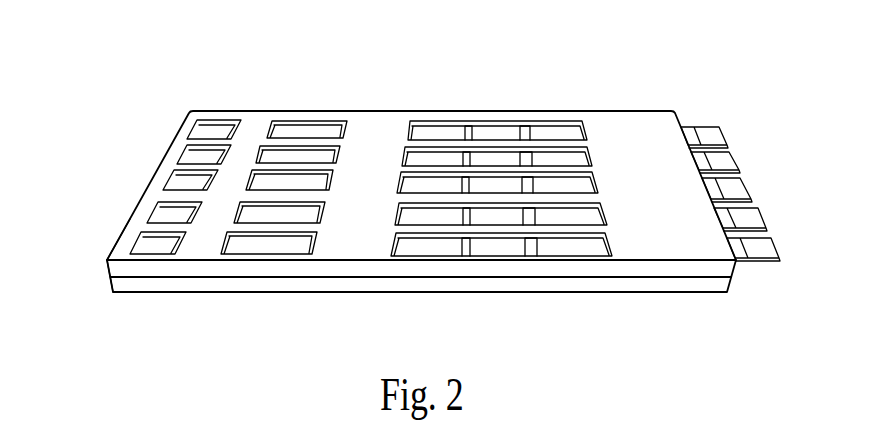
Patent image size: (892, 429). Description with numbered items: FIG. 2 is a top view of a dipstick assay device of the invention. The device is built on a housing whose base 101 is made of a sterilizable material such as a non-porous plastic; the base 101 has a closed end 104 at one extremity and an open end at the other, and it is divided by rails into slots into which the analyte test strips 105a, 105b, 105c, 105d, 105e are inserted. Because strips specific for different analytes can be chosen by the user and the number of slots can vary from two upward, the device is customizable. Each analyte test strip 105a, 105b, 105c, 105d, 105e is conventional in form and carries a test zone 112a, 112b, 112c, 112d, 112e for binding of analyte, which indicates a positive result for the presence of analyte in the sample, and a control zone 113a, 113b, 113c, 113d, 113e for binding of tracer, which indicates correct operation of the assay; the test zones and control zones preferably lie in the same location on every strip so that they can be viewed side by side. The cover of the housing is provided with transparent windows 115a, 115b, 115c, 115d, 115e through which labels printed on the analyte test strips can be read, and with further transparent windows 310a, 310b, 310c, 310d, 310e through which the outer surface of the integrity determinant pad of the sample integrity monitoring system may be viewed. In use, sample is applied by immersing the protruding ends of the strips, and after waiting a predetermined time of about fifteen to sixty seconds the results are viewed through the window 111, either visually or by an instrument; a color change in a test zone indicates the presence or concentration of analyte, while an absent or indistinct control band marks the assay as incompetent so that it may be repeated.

The base 101 is at (155, 287).
The closed end 104 is at (107, 249).
The window 111 is at (500, 259).
The test zone 112a is at (468, 133).
The test zone 112b is at (462, 158).
The test zone 112c is at (460, 185).
The test zone 112d is at (467, 212).
The test zone 112e is at (467, 245).
The control zone 113a is at (521, 130).
The control zone 113b is at (532, 157).
The control zone 113c is at (534, 185).
The control zone 113d is at (541, 218).
The control zone 113e is at (528, 250).
The transparent window 115a is at (326, 132).
The transparent window 115b is at (290, 158).
The transparent window 115c is at (248, 185).
The transparent window 115d is at (248, 217).
The transparent window 115e is at (267, 247).
The transparent window 310a is at (213, 125).
The transparent window 310b is at (193, 148).
The transparent window 310c is at (177, 182).
The transparent window 310d is at (159, 212).
The transparent window 310e is at (145, 246).
The analyte test strip 105a is at (707, 133).
The analyte test strip 105b is at (725, 160).
The analyte test strip 105c is at (739, 192).
The analyte test strip 105d is at (755, 220).
The analyte test strip 105e is at (761, 256).